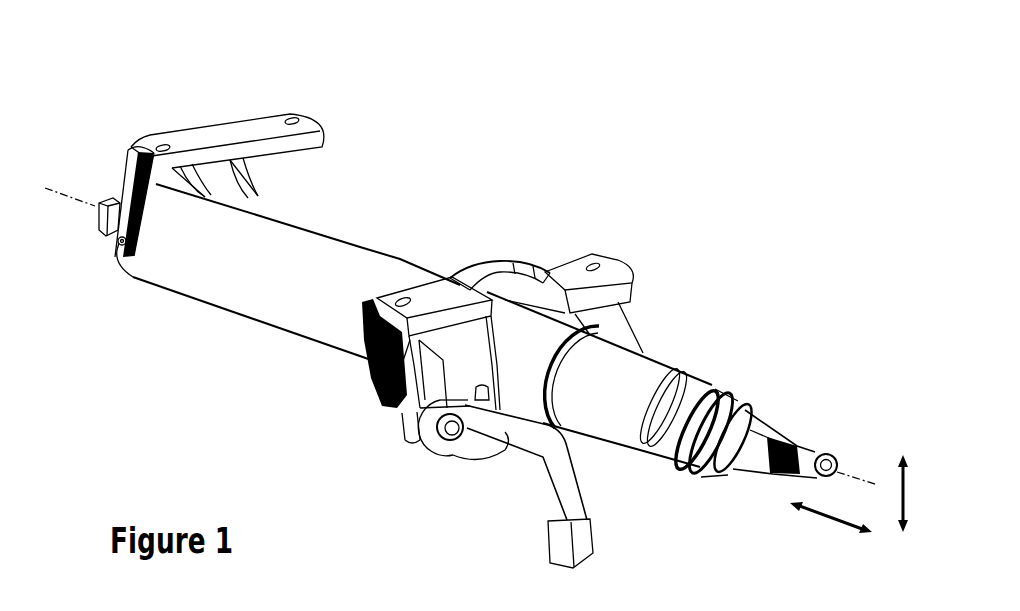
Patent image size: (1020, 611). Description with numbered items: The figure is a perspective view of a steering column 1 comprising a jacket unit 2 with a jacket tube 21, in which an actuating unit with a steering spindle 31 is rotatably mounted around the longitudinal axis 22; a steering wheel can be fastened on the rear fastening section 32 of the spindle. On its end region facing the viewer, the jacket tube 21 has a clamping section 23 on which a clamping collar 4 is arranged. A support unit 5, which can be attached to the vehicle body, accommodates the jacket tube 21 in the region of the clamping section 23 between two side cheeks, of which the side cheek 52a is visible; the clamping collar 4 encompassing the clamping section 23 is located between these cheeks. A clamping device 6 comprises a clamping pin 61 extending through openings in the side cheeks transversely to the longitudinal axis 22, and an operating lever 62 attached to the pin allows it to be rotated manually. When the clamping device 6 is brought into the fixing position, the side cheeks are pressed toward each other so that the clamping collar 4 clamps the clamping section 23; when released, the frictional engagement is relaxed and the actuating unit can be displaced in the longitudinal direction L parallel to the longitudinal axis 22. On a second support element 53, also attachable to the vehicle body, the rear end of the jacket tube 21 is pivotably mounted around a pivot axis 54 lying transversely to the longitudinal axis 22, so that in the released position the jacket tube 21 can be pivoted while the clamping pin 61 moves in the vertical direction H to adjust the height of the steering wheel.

The steering column 1 is at (482, 145).
The jacket unit 2 is at (328, 222).
The jacket tube 21 is at (305, 318).
The longitudinal axis 22 is at (867, 483).
The clamping section 23 is at (573, 372).
The steering spindle 31 is at (723, 437).
The rear fastening section 32 is at (787, 440).
The clamping collar 4 is at (540, 335).
The support unit 5 is at (545, 247).
The side cheek 52a is at (452, 370).
The second support element 53 is at (228, 135).
The pivot axis 54 is at (117, 248).
The clamping device 6 is at (430, 455).
The clamping pin 61 is at (452, 447).
The operating lever 62 is at (567, 485).
The vertical direction H is at (908, 493).
The longitudinal direction L is at (838, 522).